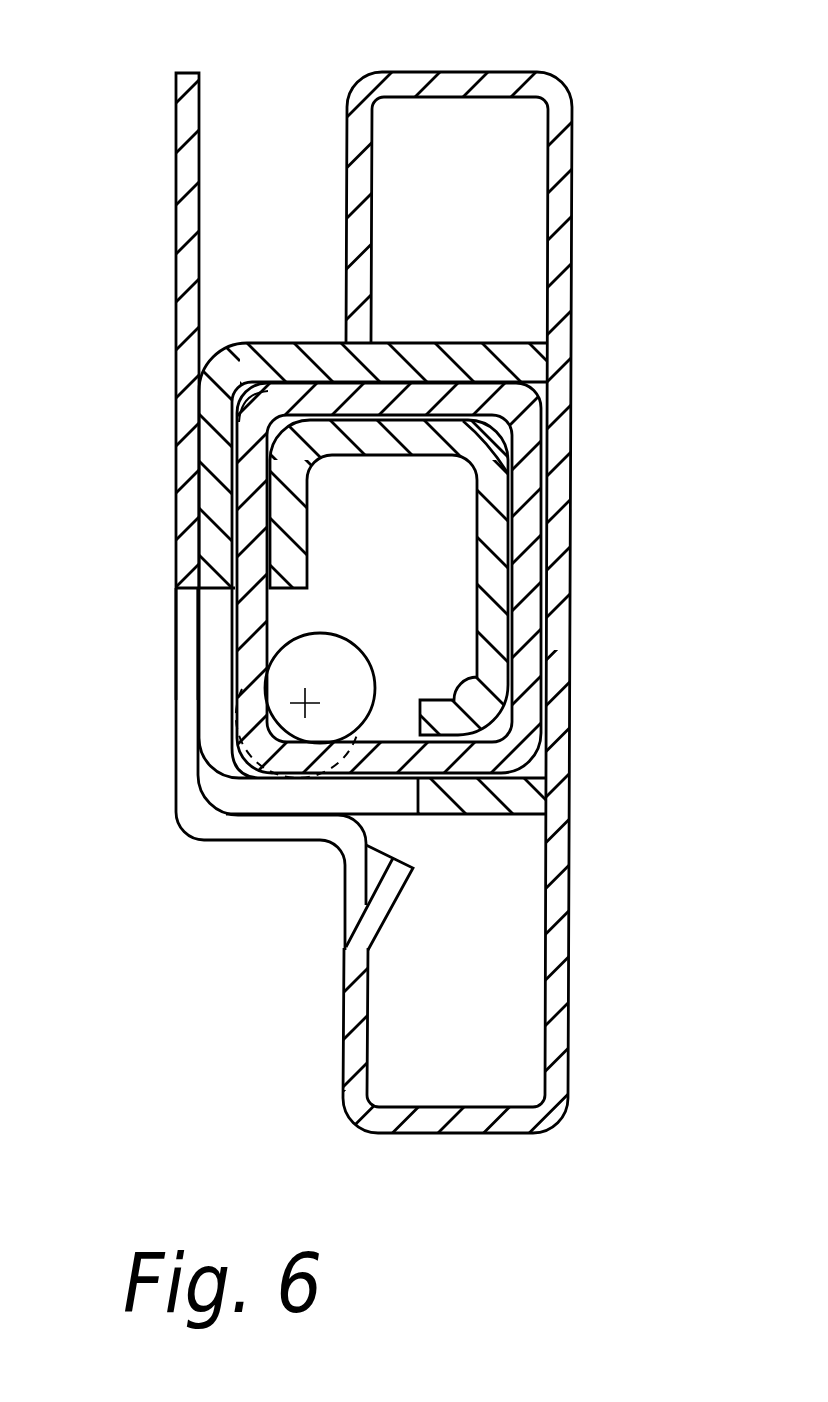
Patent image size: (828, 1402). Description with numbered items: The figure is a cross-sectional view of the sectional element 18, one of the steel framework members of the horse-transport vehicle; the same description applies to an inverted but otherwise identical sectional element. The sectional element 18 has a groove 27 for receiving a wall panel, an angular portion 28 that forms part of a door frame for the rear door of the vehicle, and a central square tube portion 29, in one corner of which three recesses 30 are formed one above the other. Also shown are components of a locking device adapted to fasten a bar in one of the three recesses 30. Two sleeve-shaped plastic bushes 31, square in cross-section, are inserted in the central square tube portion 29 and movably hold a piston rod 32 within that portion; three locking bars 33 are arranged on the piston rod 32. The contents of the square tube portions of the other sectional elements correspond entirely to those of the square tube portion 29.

The sectional element 18 is at (594, 122).
The groove 27 is at (200, 103).
The angular portion 28 is at (305, 842).
The central square tube portion 29 is at (492, 344).
The recess 30 is at (213, 590).
The sleeve-shaped plastic bush 31 is at (517, 388).
The piston rod 32 is at (497, 716).
The locking bar 33 is at (320, 633).